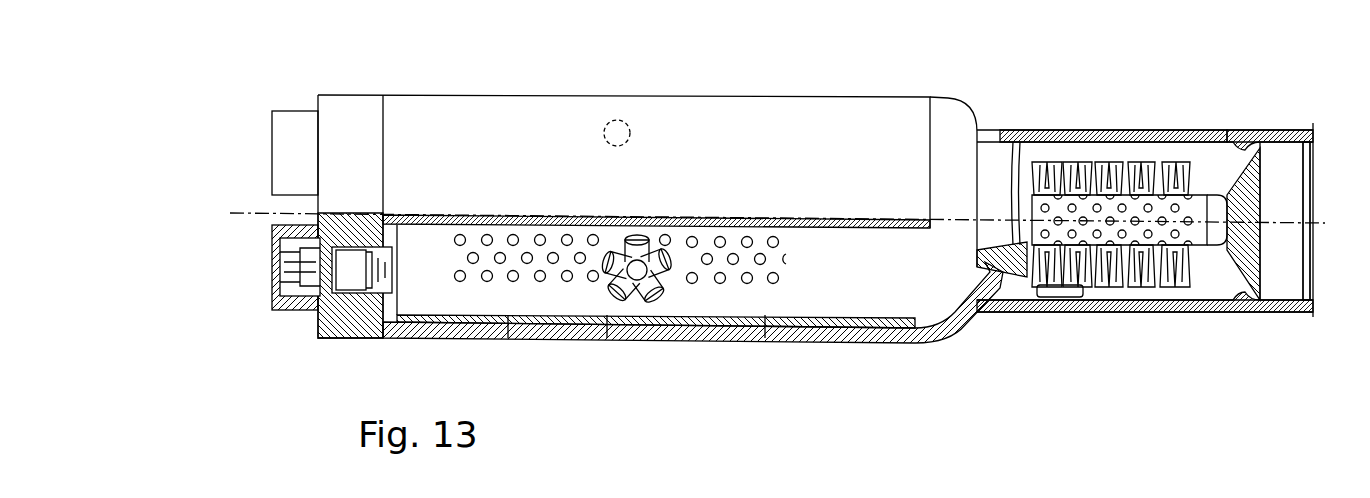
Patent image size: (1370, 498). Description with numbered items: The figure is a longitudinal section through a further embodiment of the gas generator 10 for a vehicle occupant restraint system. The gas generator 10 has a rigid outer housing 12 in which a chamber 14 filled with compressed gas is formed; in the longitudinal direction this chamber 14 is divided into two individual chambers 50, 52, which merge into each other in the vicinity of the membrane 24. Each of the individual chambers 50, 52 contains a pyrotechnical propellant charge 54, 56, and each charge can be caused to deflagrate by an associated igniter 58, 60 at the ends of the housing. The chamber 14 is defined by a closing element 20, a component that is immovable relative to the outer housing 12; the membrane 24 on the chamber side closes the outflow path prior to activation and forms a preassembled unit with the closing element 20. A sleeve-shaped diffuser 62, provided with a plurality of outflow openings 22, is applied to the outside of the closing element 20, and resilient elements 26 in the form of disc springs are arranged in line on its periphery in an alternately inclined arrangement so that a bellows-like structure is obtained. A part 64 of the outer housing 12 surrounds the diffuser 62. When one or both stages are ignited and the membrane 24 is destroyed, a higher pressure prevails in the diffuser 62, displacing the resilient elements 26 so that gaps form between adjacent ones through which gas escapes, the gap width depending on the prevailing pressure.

The gas generator 10 is at (363, 67).
The outer housing 12 is at (707, 333).
The chamber 14 is at (950, 297).
The closing element 20 is at (1027, 133).
The outflow openings 22 is at (1103, 173).
The membrane 24 is at (993, 225).
The resilient elements 26 is at (1183, 170).
The individual chamber 50 is at (860, 303).
The individual chamber 52 is at (693, 128).
The pyrotechnical propellant charge 54 is at (607, 317).
The pyrotechnical propellant charge 56 is at (615, 125).
The igniter 58 is at (287, 312).
The igniter 60 is at (310, 147).
The diffuser 62 is at (1207, 253).
The part of the outer housing 64 is at (1275, 310).